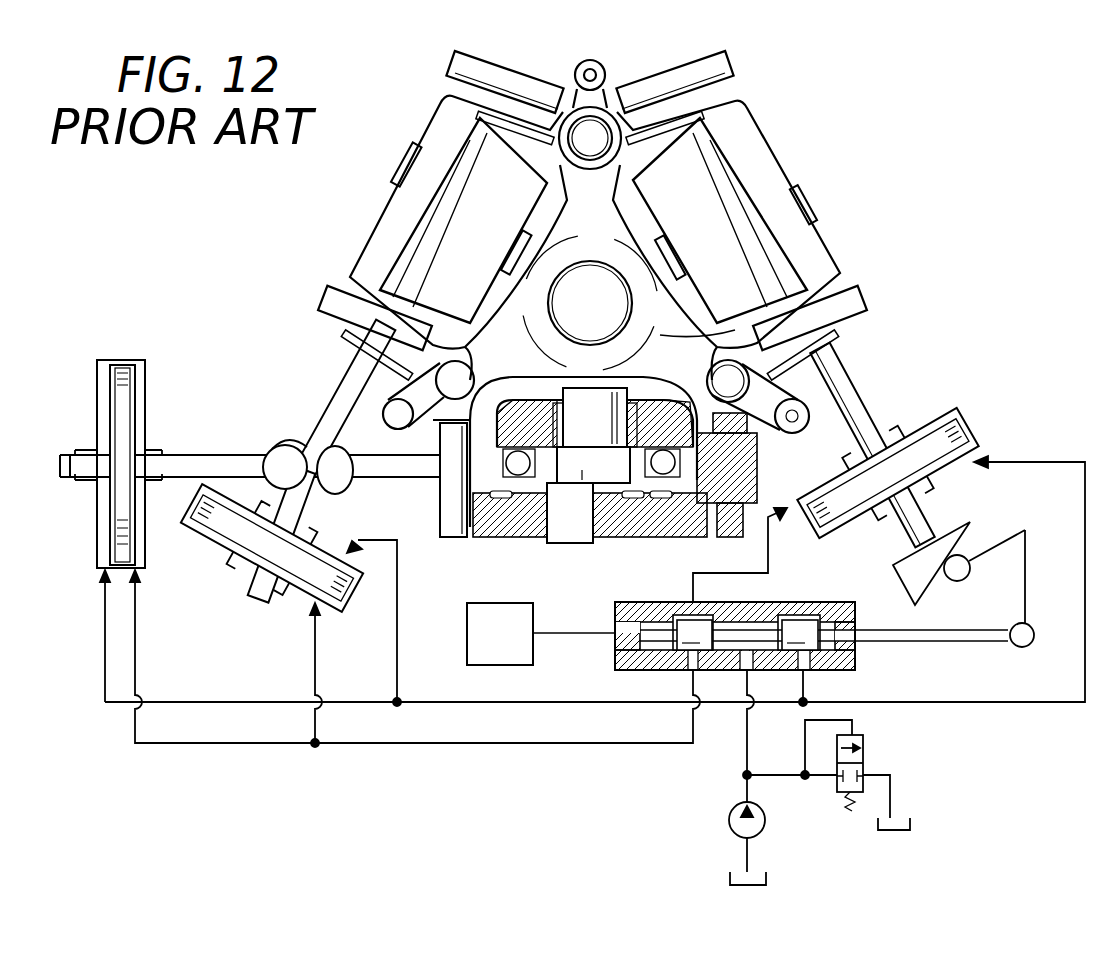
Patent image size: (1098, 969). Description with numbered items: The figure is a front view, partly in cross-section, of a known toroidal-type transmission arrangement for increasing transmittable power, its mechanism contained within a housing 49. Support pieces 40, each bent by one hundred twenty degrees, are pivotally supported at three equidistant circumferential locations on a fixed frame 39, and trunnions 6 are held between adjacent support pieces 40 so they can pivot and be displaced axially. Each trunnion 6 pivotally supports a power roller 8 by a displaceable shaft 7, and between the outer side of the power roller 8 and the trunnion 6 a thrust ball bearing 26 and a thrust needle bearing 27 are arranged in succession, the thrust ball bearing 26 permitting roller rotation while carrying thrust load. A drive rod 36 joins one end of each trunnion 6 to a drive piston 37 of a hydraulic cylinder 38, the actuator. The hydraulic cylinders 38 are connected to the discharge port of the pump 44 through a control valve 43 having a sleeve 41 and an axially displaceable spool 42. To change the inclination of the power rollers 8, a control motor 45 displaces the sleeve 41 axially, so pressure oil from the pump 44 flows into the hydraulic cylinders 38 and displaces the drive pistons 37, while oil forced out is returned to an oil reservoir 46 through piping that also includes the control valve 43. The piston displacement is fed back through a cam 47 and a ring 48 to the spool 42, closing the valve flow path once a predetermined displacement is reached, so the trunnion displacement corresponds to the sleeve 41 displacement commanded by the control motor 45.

The trunnion 6 is at (447, 112).
The displaceable shaft 7 is at (400, 163).
The power roller 8 is at (463, 227).
The thrust ball bearing 26 is at (490, 515).
The thrust needle bearing 27 is at (712, 520).
The drive rod 36 is at (220, 462).
The drive piston 37 is at (127, 387).
The hydraulic cylinder 38 is at (147, 420).
The fixed frame 39 is at (700, 332).
The support piece 40 is at (717, 63).
The sleeve 41 is at (750, 604).
The spool 42 is at (805, 622).
The control valve 43 is at (608, 602).
The pump 44 is at (770, 820).
The control motor 45 is at (467, 625).
The oil reservoir 46 is at (910, 823).
The cam 47 is at (957, 517).
The ring 48 is at (1027, 590).
The universal joint 49 is at (290, 460).